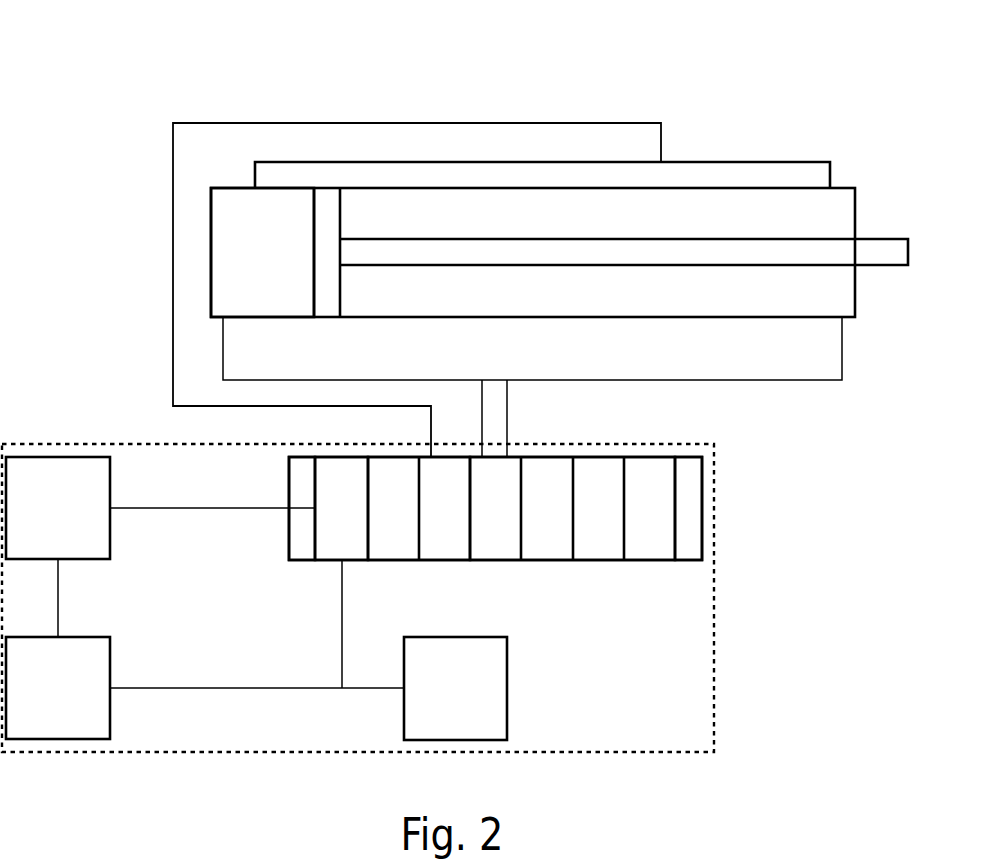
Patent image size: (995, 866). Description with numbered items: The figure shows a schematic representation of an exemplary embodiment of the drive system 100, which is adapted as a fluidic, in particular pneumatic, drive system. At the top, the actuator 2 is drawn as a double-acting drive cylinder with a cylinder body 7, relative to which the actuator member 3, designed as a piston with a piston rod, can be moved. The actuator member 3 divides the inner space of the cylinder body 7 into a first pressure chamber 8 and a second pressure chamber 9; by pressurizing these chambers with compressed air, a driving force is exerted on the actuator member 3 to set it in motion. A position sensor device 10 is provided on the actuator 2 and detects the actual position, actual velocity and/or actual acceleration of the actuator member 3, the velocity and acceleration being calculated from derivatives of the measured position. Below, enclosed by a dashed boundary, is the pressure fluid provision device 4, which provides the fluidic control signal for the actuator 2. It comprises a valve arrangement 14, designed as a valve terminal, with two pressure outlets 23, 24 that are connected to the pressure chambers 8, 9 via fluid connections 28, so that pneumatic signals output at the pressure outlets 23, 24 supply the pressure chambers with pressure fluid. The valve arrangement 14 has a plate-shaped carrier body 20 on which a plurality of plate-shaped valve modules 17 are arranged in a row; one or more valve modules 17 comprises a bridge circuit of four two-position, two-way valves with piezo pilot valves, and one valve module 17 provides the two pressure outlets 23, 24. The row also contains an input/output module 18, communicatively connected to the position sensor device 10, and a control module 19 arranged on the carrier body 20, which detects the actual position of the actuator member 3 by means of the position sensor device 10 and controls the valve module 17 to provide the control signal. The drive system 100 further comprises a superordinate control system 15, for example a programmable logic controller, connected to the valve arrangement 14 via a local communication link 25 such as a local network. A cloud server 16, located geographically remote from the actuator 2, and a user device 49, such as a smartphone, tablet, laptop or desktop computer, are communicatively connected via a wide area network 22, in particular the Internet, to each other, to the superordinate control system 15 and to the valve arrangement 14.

The drive system 100 is at (119, 89).
The actuator 2 is at (124, 262).
The cylinder body 7 is at (843, 186).
The position sensor device 10 is at (763, 172).
The first pressure chamber 8 is at (256, 264).
The actuator member 3 is at (330, 296).
The second pressure chamber 9 is at (590, 227).
The fluid connections 28 is at (296, 380).
The pressure outlet 23 is at (483, 455).
The pressure outlet 24 is at (508, 455).
The pressure fluid provision device 4 is at (716, 580).
The valve arrangement 14 is at (703, 492).
The carrier body 20 is at (298, 560).
The control module 19 is at (329, 524).
The input/output module 18 is at (381, 524).
The valve modules 17 is at (484, 524).
The superordinate control system 15 is at (45, 525).
The cloud server 16 is at (45, 704).
The user device 49 is at (443, 704).
The local communication link 25 is at (212, 497).
The wide area network 22 is at (231, 625).